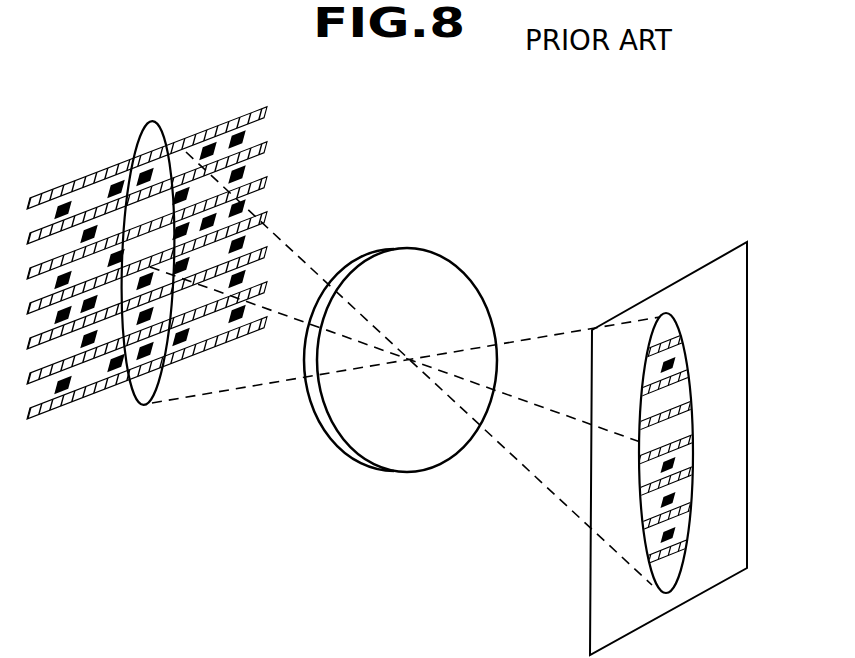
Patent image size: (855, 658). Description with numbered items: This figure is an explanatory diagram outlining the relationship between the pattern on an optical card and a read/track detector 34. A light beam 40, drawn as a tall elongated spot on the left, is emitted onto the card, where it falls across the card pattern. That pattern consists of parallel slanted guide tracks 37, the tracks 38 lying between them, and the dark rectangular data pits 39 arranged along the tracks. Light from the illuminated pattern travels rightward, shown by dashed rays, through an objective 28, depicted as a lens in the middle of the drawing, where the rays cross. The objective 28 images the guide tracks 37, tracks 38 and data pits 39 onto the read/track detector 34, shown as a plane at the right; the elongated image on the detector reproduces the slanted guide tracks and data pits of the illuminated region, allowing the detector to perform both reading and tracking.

The light beam 40 is at (134, 143).
The data pits 39 is at (208, 143).
The guide tracks 37 is at (263, 142).
The tracks 38 is at (253, 201).
The objective 28 is at (404, 248).
The read/track detector 34 is at (653, 288).